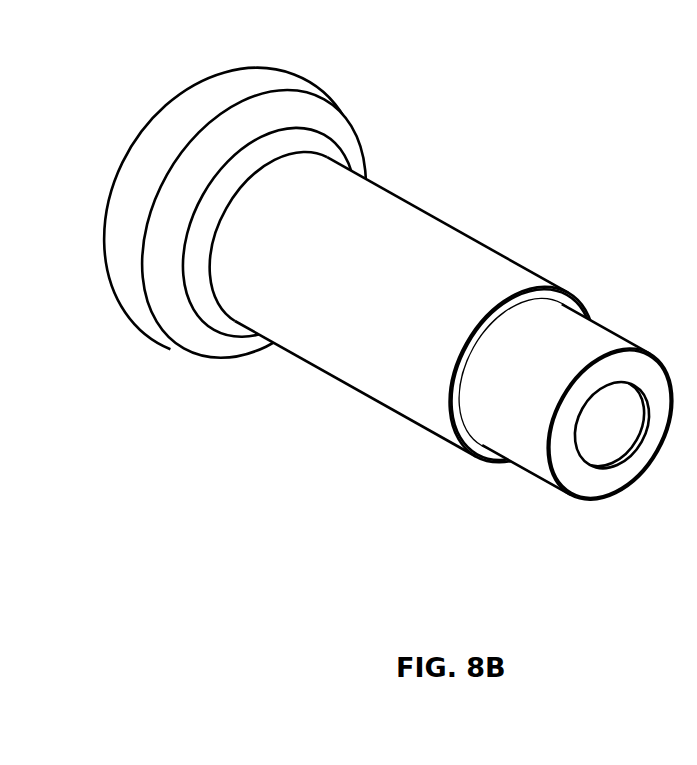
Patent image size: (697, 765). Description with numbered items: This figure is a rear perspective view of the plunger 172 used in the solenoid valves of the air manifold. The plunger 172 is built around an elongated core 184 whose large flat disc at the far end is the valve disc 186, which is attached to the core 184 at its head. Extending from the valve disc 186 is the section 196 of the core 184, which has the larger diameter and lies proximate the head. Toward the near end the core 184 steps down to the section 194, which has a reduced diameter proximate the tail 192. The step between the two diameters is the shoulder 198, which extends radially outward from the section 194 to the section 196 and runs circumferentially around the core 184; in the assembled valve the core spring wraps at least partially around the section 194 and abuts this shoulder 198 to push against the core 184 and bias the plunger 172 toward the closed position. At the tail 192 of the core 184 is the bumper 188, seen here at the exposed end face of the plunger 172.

The plunger 172 is at (372, 307).
The valve disc 186 is at (132, 140).
The core 184 is at (292, 356).
The section 196 is at (373, 372).
The shoulder 198 is at (487, 452).
The section 194 is at (522, 432).
The tail 192 is at (592, 482).
The bumper 188 is at (632, 438).